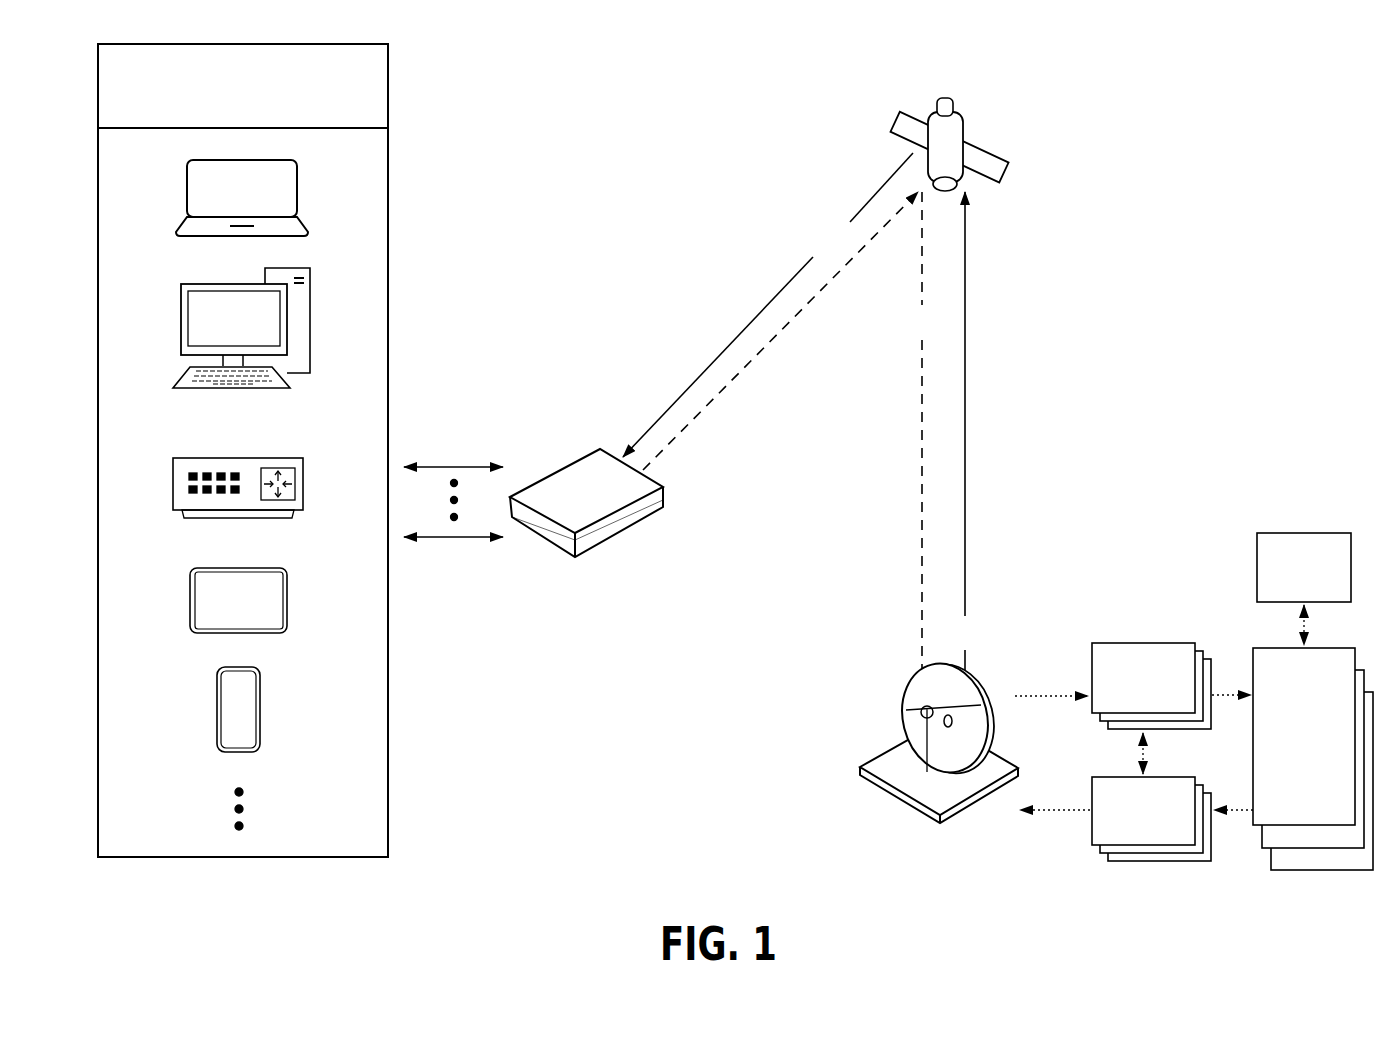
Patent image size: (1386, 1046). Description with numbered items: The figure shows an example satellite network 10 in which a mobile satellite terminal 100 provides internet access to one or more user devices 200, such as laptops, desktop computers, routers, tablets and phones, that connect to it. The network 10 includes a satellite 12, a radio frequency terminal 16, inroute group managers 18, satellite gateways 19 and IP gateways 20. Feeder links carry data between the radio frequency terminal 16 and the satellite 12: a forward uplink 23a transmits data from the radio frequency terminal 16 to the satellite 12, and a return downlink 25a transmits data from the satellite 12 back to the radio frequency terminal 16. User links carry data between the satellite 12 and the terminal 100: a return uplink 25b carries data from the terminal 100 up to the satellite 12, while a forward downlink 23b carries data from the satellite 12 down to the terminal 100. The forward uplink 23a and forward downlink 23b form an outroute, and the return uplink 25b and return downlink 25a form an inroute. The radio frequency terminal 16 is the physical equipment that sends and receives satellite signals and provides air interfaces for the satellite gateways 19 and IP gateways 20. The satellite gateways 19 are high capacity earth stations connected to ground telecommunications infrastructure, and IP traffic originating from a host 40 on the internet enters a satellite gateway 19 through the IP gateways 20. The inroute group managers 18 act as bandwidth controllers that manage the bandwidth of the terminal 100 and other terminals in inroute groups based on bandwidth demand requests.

The satellite network 10 is at (666, 105).
The satellite 12 is at (980, 150).
The radio frequency terminal 16 is at (981, 717).
The inroute group managers 18 is at (1151, 686).
The satellite gateways 19 is at (1151, 819).
The IP gateways 20 is at (1292, 763).
The host 40 is at (1292, 593).
The mobile satellite terminal 100 is at (582, 456).
The user devices 200 is at (330, 97).
The forward uplink 23a is at (967, 441).
The forward downlink 23b is at (768, 305).
The return downlink 25a is at (931, 441).
The return uplink 25b is at (780, 331).